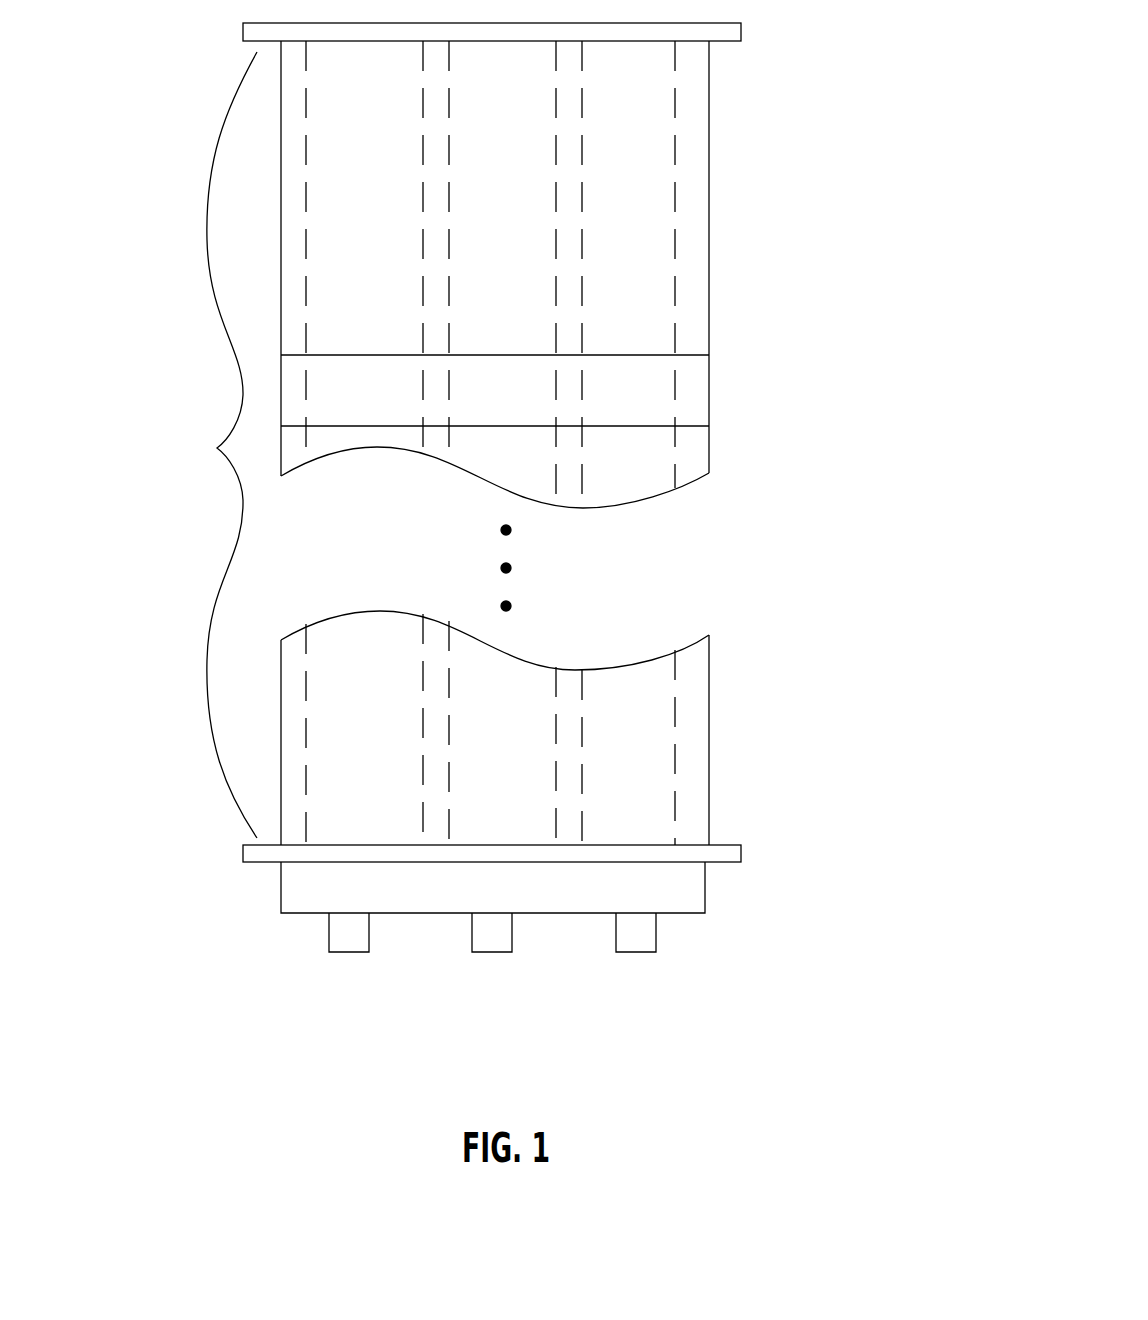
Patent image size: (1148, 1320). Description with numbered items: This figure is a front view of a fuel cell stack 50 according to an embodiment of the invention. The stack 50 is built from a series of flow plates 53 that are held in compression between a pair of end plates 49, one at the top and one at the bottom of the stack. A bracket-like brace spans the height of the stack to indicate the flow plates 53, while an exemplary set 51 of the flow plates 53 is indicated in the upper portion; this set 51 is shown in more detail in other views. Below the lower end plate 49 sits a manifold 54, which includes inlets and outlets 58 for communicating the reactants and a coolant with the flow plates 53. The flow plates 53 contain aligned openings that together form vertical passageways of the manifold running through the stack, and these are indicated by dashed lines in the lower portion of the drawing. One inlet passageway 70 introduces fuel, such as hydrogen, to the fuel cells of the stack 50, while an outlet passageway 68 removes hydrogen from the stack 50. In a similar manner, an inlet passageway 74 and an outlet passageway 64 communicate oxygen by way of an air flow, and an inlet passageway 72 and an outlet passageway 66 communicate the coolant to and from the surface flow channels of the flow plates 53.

The end plates 49 is at (546, 442).
The fuel cell stack 50 is at (853, 190).
The set of flow plates 51 is at (545, 274).
The flow plates 53 is at (180, 445).
The manifold 54 is at (426, 927).
The inlets and outlets 58 is at (479, 1018).
The outlet passageway 64 is at (241, 783).
The inlet passageway 70 is at (241, 783).
The outlet passageway 66 is at (563, 710).
The inlet passageway 72 is at (563, 710).
The outlet passageway 68 is at (703, 740).
The inlet passageway 74 is at (703, 740).